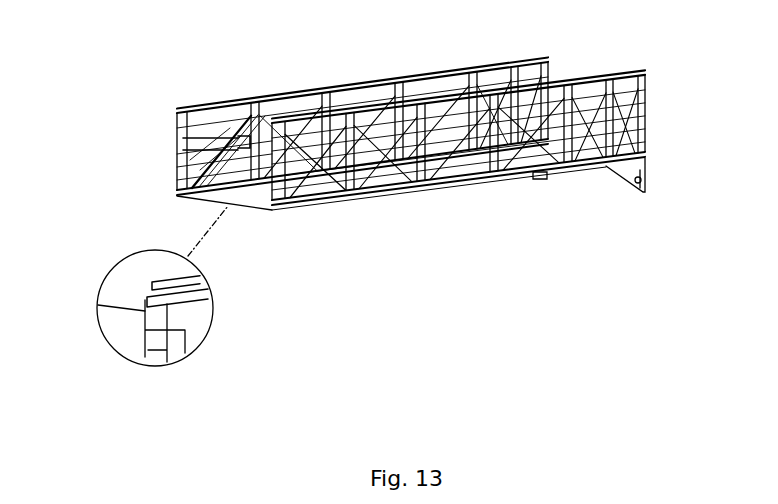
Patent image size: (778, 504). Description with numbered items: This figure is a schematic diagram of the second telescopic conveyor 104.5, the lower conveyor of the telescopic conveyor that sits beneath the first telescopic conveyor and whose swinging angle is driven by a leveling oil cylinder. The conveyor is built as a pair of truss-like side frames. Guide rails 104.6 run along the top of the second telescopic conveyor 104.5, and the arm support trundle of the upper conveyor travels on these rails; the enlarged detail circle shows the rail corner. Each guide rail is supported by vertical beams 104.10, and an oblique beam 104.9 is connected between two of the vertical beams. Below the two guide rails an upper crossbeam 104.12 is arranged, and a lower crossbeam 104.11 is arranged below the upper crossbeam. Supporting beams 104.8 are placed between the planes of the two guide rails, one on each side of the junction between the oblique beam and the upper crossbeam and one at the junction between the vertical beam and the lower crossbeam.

The second telescopic conveyor 104.5 is at (188, 103).
The guide rails 104.6 is at (152, 282).
The supporting beams 104.8 is at (236, 135).
The oblique beam 104.9 is at (330, 167).
The vertical beams 104.10 is at (422, 153).
The lower crossbeam 104.11 is at (560, 163).
The upper crossbeam 104.12 is at (183, 140).